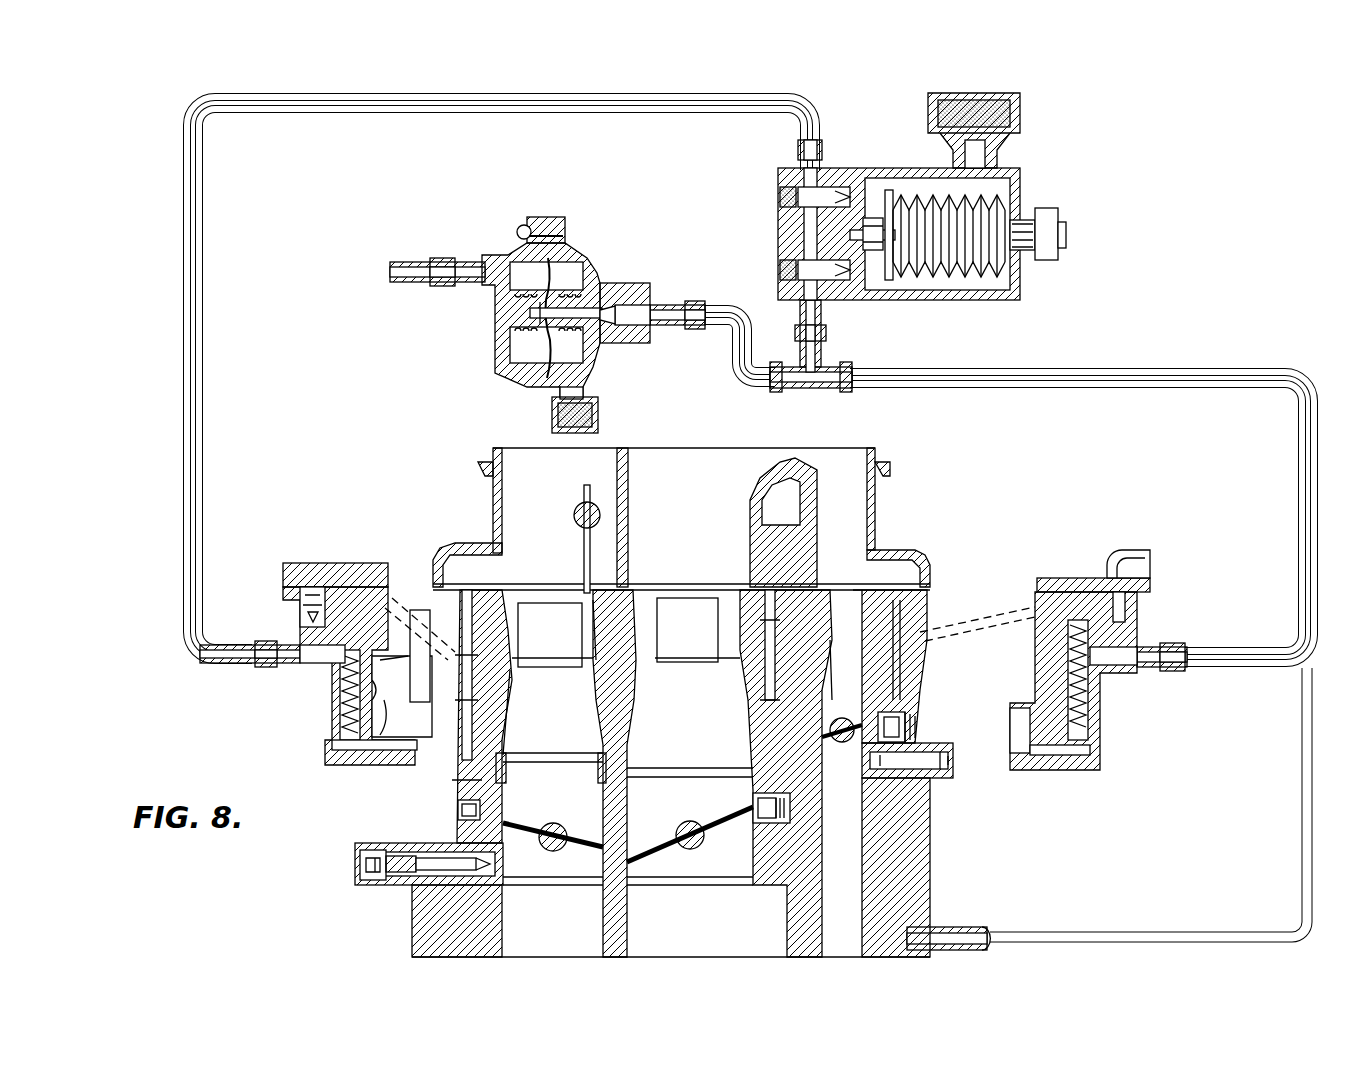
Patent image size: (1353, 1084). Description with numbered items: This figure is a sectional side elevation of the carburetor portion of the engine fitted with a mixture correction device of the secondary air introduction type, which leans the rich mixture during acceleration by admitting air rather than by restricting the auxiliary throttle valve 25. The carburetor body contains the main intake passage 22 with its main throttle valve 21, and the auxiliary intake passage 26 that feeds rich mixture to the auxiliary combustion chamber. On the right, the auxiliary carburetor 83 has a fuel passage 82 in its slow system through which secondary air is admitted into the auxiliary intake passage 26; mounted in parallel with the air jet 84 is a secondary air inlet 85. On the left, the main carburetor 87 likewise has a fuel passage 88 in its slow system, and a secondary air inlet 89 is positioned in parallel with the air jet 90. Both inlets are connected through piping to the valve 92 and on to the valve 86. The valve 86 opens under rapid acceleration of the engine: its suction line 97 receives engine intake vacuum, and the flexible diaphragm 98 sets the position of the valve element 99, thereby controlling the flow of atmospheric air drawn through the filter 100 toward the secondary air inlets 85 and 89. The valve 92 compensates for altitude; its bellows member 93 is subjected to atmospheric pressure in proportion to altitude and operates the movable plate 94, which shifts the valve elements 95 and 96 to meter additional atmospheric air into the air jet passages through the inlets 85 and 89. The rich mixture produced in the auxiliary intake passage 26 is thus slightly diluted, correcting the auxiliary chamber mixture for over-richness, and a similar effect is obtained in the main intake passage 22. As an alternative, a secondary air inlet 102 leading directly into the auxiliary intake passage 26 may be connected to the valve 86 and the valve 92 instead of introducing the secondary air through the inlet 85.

The main throttle valve 21 is at (531, 840).
The main intake passage 22 is at (562, 726).
The auxiliary throttle valve 25 is at (836, 742).
The auxiliary intake passage 26 is at (848, 675).
The fuel passage 82 is at (1008, 620).
The auxiliary carburetor 83 is at (1061, 648).
The air jet 84 is at (1123, 562).
The secondary air inlet 85 is at (1165, 650).
The valve 86 is at (557, 325).
The main carburetor 87 is at (369, 639).
The fuel passage 88 is at (380, 600).
The secondary air inlet 89 is at (282, 670).
The air jet 90 is at (308, 590).
The valve 92 is at (931, 217).
The bellows member 93 is at (992, 272).
The movable plate 94 is at (890, 278).
The valve element 95 is at (840, 192).
The valve element 96 is at (840, 278).
The suction line 97 is at (414, 262).
The flexible diaphragm 98 is at (520, 360).
The valve element 99 is at (600, 338).
The filter 100 is at (598, 412).
The secondary air inlet 102 is at (962, 928).